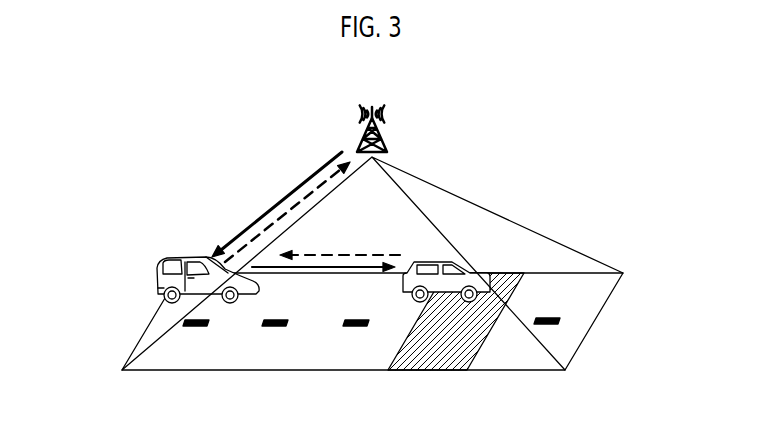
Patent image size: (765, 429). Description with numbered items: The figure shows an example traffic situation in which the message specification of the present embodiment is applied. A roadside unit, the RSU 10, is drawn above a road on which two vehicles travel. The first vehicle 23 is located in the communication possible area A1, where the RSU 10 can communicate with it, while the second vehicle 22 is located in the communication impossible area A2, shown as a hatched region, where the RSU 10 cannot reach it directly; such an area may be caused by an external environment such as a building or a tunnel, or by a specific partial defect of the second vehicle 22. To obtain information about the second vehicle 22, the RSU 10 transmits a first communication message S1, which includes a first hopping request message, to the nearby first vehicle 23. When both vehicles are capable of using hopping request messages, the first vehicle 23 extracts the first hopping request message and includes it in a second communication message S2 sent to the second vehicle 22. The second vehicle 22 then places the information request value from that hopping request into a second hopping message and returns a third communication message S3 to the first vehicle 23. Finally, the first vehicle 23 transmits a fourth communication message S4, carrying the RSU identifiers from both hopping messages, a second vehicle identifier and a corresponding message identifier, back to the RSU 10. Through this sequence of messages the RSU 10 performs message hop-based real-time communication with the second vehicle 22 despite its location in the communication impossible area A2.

The RSU 10 is at (392, 113).
The second vehicle 22 is at (440, 296).
The first vehicle 23 is at (191, 257).
The communication possible area A1 is at (263, 357).
The communication impossible area A2 is at (501, 285).
The first communication message S1 is at (288, 193).
The second communication message S2 is at (337, 270).
The third communication message S3 is at (353, 253).
The fourth communication message S4 is at (323, 183).